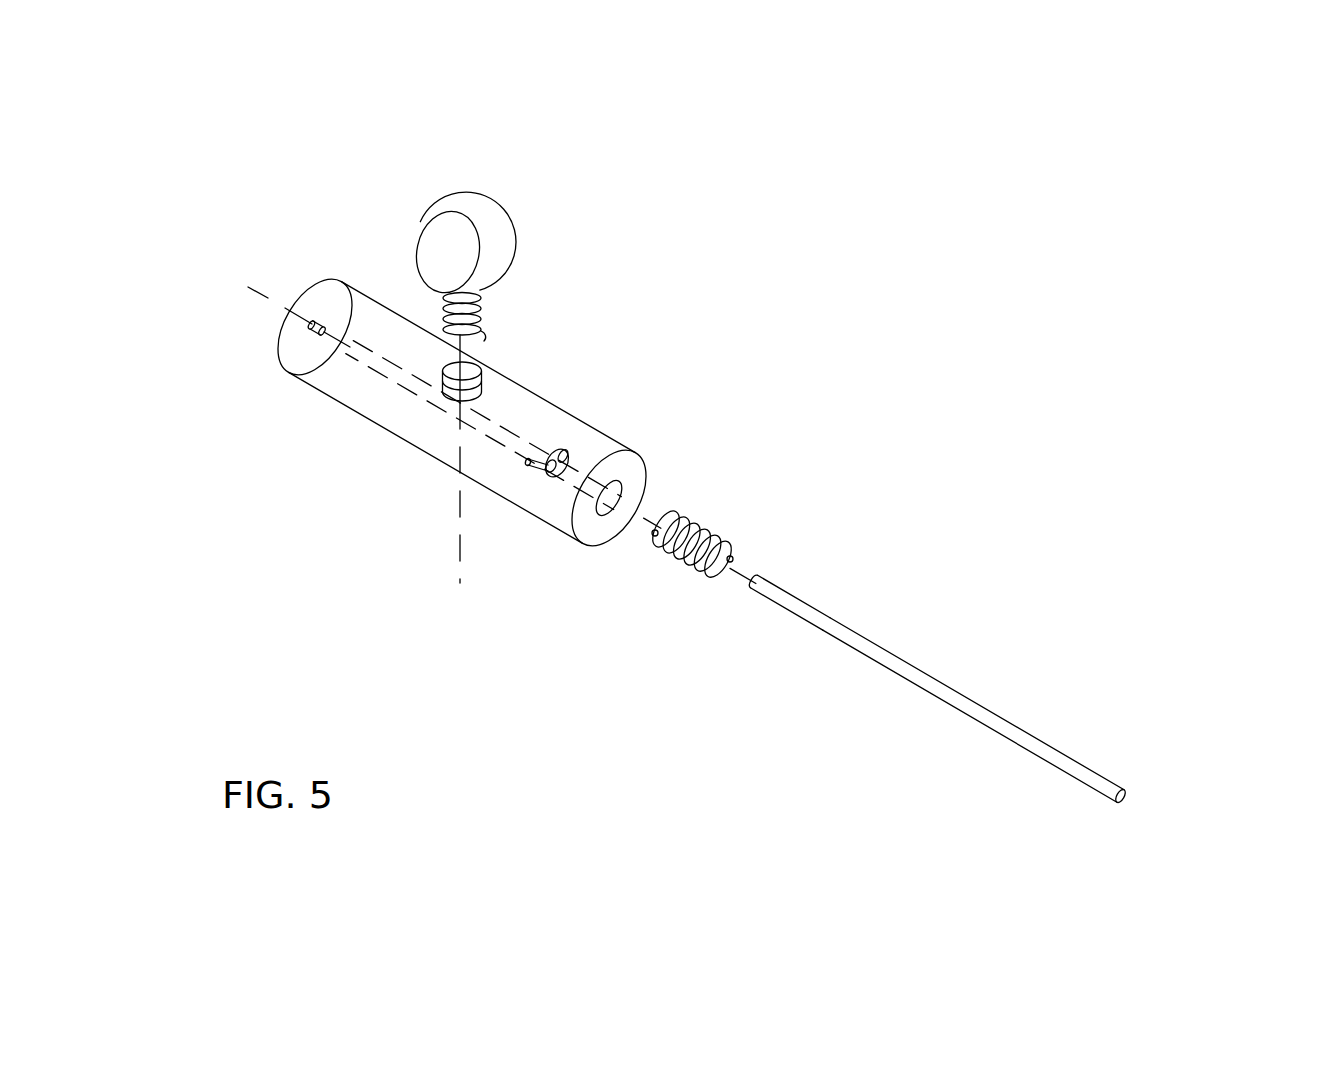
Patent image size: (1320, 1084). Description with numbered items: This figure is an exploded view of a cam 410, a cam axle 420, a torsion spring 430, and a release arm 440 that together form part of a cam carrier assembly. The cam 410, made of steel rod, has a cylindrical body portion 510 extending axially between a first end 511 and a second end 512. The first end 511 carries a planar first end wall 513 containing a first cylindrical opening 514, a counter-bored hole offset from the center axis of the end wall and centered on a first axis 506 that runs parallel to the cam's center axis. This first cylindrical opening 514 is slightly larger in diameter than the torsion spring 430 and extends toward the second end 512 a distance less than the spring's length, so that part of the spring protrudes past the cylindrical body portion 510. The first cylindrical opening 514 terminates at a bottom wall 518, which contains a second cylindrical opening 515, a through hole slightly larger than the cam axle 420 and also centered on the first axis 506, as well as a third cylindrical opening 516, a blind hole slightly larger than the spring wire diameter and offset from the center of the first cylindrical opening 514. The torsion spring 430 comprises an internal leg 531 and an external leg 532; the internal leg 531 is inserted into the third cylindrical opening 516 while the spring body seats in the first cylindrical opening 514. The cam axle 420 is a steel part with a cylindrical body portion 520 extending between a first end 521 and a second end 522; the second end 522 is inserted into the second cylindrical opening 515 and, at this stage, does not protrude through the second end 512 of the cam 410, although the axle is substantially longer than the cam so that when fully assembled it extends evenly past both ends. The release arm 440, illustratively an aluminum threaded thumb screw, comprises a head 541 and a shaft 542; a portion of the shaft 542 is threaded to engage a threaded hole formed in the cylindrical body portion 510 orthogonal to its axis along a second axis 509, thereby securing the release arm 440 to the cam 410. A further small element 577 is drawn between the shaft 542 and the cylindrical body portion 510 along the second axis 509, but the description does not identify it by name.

The cam 410 is at (263, 319).
The cam axle 420 is at (1003, 734).
The torsion spring 430 is at (751, 570).
The release arm 440 is at (483, 245).
The first axis 506 is at (267, 297).
The second axis 509 is at (458, 522).
The cylindrical body portion 510 is at (536, 427).
The first end 511 is at (555, 425).
The second end 512 is at (380, 300).
The planar first end wall 513 is at (606, 530).
The first cylindrical opening 514 is at (648, 462).
The second cylindrical opening 515 is at (558, 482).
The third cylindrical opening 516 is at (537, 477).
The bottom wall 518 is at (566, 456).
The cylindrical body portion 520 is at (1003, 689).
The first end 521 is at (1095, 771).
The second end 522 is at (820, 618).
The internal leg 531 is at (654, 535).
The external leg 532 is at (730, 565).
The head 541 is at (490, 197).
The shaft 542 is at (482, 292).
The plug 577 is at (487, 362).